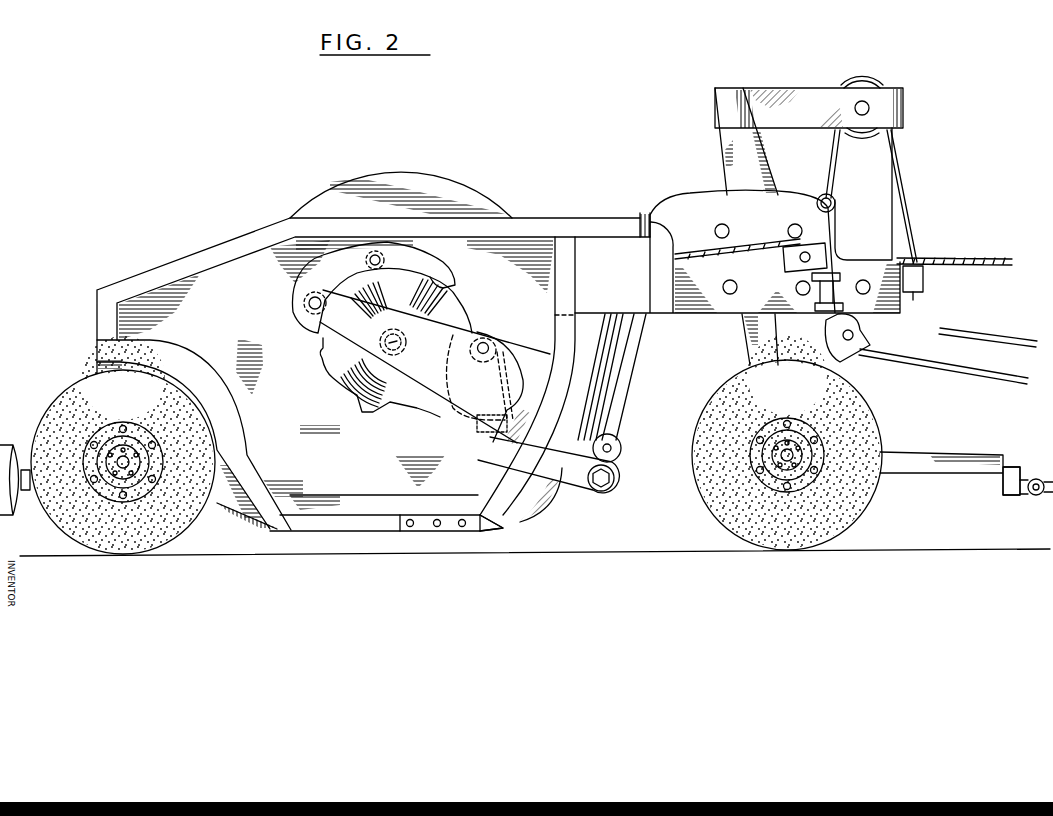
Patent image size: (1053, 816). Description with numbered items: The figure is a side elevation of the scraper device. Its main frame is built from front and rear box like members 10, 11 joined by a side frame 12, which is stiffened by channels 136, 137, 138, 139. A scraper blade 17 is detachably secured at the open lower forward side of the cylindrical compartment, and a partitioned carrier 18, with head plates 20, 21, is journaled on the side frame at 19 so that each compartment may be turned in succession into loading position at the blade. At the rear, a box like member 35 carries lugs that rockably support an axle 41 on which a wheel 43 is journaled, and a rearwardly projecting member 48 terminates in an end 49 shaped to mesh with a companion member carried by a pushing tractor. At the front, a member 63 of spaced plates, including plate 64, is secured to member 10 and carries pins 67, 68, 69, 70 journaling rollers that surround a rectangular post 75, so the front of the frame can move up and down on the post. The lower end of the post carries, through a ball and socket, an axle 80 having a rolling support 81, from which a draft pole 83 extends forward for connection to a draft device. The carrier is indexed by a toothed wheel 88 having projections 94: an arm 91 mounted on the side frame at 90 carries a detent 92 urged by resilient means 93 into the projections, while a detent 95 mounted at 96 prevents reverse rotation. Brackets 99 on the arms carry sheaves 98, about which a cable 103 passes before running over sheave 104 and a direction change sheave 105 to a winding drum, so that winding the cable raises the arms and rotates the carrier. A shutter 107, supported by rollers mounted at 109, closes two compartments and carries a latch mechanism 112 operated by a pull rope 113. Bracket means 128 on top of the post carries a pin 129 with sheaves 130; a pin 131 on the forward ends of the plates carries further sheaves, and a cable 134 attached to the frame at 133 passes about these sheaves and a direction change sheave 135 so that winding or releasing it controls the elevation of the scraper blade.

The front box like member 10 is at (652, 212).
The rear box like member 11 is at (176, 256).
The side frame 12 is at (325, 520).
The scraper blade 17 is at (470, 533).
The partitioned carrier 18 is at (356, 207).
The carrier journal 19 is at (383, 338).
The head plate 20 is at (318, 202).
The head plate 21 is at (414, 190).
The box like member 35 is at (233, 445).
The axle 41 is at (117, 462).
The wheel 43 is at (123, 445).
The rearwardly projecting member 48 is at (30, 492).
The rearmost end of projecting member 49 is at (15, 447).
The member 63 is at (696, 241).
The plate 64 is at (683, 205).
The pin 67 is at (722, 224).
The pin 68 is at (795, 224).
The pin 69 is at (730, 280).
The pin 70 is at (796, 288).
The post 75 is at (715, 98).
The axle 80 is at (783, 455).
The rolling support 81 is at (787, 442).
The draft pole 83 is at (918, 468).
The toothed wheel 88 is at (453, 324).
The arm mounting 90 is at (302, 306).
The arm 91 is at (582, 490).
The detent 92 is at (463, 425).
The resilient means 93 is at (500, 341).
The projections 94 is at (418, 275).
The detent 95 is at (452, 280).
The detent mounting 96 is at (368, 261).
The sheaves 98 is at (622, 436).
The brackets 99 is at (615, 464).
The cable 103 is at (748, 246).
The sheave 104 is at (807, 248).
The direction change sheave 105 is at (865, 347).
The shutter 107 is at (545, 488).
The roller mounting 109 is at (1013, 382).
The latch mechanism 112 is at (604, 342).
The pull rope 113 is at (997, 257).
The bracket means 128 is at (811, 98).
The pin 129 is at (858, 102).
The sheaves 130 is at (862, 80).
The pin 131 is at (861, 280).
The cable attachment 133 is at (822, 195).
The cable 134 is at (836, 194).
The direction change sheave 135 is at (487, 530).
The channel 136 is at (554, 302).
The channel 137 is at (206, 256).
The channel 138 is at (257, 466).
The channel 139 is at (318, 497).